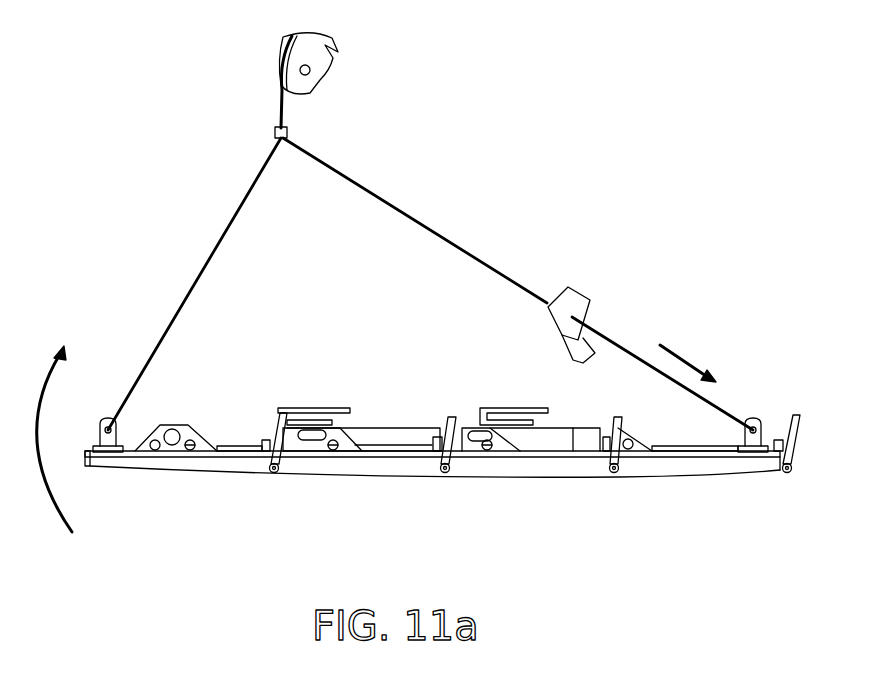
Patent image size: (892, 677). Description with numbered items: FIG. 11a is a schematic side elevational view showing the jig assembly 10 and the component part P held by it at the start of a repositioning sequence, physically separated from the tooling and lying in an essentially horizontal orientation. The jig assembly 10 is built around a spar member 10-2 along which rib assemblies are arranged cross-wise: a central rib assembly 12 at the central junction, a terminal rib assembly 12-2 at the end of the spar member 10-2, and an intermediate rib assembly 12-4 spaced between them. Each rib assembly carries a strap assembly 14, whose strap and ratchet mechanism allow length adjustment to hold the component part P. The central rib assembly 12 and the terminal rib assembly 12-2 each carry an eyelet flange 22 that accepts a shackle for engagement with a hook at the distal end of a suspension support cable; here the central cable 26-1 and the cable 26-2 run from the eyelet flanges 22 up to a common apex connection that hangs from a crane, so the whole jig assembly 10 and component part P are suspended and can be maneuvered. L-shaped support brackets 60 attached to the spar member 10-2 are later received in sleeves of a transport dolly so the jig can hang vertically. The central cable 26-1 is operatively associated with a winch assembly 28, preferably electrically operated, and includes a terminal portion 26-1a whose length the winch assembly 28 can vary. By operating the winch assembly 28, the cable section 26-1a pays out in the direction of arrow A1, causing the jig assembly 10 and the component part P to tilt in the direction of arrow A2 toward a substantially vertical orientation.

The jig assembly 10 is at (448, 286).
The spar member 10-2 is at (407, 430).
The central rib assembly 12 is at (448, 438).
The terminal rib assembly 12-2 is at (218, 446).
The intermediate rib assembly 12-4 is at (372, 444).
The strap assembly 14 is at (284, 468).
The eyelet flange 22 is at (104, 441).
The central support cable 26-1 is at (518, 284).
The terminal portion of central cable 26-1a is at (627, 349).
The suspension support cable 26-2 is at (219, 238).
The winch assembly 28 is at (572, 302).
The L-shaped support bracket 60 is at (304, 407).
The component part P is at (560, 472).
The arrow A1 is at (694, 362).
The arrow A2 is at (46, 404).